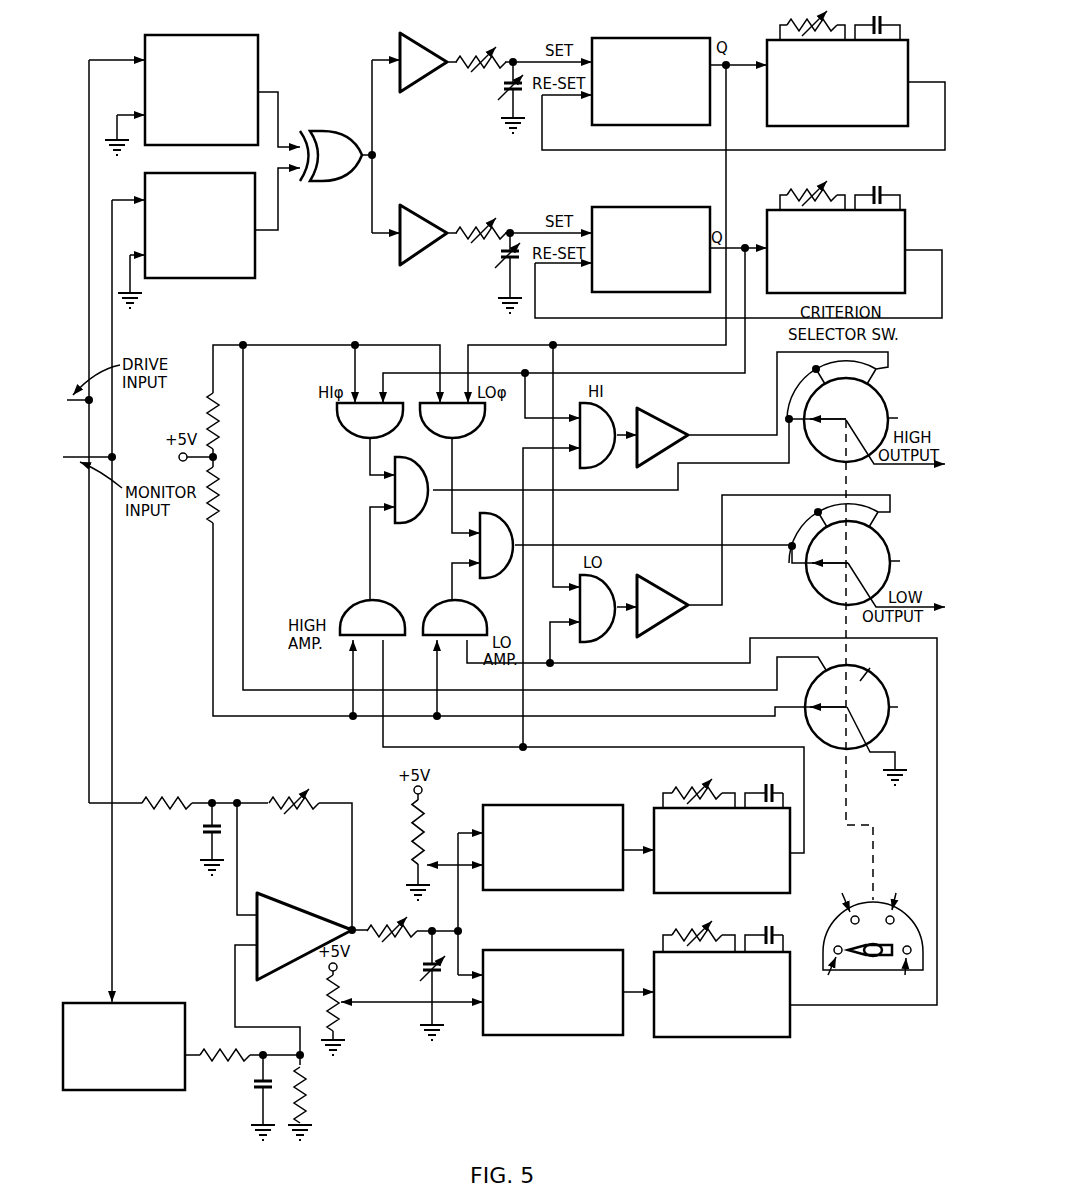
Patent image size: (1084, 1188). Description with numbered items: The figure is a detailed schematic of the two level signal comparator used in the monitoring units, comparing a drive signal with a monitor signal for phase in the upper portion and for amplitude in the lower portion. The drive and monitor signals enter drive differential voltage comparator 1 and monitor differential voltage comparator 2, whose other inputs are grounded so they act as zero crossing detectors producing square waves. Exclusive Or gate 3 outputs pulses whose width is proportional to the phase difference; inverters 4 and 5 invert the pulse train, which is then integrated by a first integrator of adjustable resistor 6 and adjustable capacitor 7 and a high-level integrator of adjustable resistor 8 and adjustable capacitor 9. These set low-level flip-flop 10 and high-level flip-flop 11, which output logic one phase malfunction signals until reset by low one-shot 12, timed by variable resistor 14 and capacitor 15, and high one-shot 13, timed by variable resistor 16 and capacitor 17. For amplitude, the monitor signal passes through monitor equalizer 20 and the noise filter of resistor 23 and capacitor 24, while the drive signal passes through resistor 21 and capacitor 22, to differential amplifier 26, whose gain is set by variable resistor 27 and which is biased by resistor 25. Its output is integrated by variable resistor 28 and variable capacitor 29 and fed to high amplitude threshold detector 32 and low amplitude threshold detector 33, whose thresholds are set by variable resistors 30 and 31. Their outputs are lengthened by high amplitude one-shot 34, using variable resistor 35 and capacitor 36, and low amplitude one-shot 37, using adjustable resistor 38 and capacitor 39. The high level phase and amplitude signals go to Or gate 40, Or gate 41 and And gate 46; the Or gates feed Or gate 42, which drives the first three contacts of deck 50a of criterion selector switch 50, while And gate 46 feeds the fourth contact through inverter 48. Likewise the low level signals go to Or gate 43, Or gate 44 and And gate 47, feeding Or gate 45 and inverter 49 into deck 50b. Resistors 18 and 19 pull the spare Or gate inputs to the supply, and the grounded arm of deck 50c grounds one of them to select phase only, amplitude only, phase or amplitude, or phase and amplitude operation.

The drive differential voltage comparator 1 is at (201, 90).
The monitor differential voltage comparator 2 is at (200, 225).
The exclusive Or gate 3 is at (331, 156).
The inverter 4 is at (423, 62).
The inverter 5 is at (423, 235).
The adjustable resistor 6 is at (481, 55).
The adjustable capacitor 7 is at (507, 86).
The adjustable resistor 8 is at (481, 226).
The adjustable capacitor 9 is at (501, 254).
The low-level flip-flop 10 is at (651, 81).
The high-level flip-flop 11 is at (651, 249).
The low one-shot 12 is at (837, 83).
The high one-shot 13 is at (836, 251).
The variable resistor 14 is at (812, 20).
The capacitor 15 is at (877, 20).
The variable resistor 16 is at (812, 190).
The capacitor 17 is at (877, 190).
The resistor 18 is at (224, 421).
The resistor 19 is at (224, 495).
The monitor equalizer 20 is at (124, 1046).
The resistor 21 is at (167, 793).
The capacitor 22 is at (198, 829).
The resistor 23 is at (225, 1046).
The capacitor 24 is at (248, 1084).
The resistor 25 is at (311, 1095).
The differential amplifier 26 is at (304, 936).
The variable resistor 27 is at (294, 796).
The variable resistor 28 is at (392, 938).
The variable capacitor 29 is at (418, 967).
The variable resistor 30 is at (429, 832).
The variable resistor 31 is at (321, 1003).
The high amplitude threshold detector 32 is at (553, 847).
The low amplitude threshold detector 33 is at (553, 992).
The high amplitude one-shot 34 is at (722, 850).
The variable resistor 35 is at (697, 786).
The capacitor 36 is at (767, 785).
The low amplitude one-shot 37 is at (722, 994).
The adjustable resistor 38 is at (697, 927).
The capacitor 39 is at (766, 926).
The Or gate 40 is at (370, 420).
The Or gate 41 is at (372, 617).
The Or gate 42 is at (411, 490).
The Or gate 43 is at (452, 420).
The Or gate 44 is at (455, 617).
The Or gate 45 is at (496, 545).
The And gate 46 is at (597, 435).
The And gate 47 is at (597, 608).
The inverter 48 is at (662, 437).
The inverter 49 is at (662, 606).
The criterion selector switch 50 is at (866, 677).
The first deck of criterion selector switch 50a is at (866, 413).
The second deck of criterion selector switch 50b is at (867, 560).
The third deck of criterion selector switch 50c is at (856, 725).